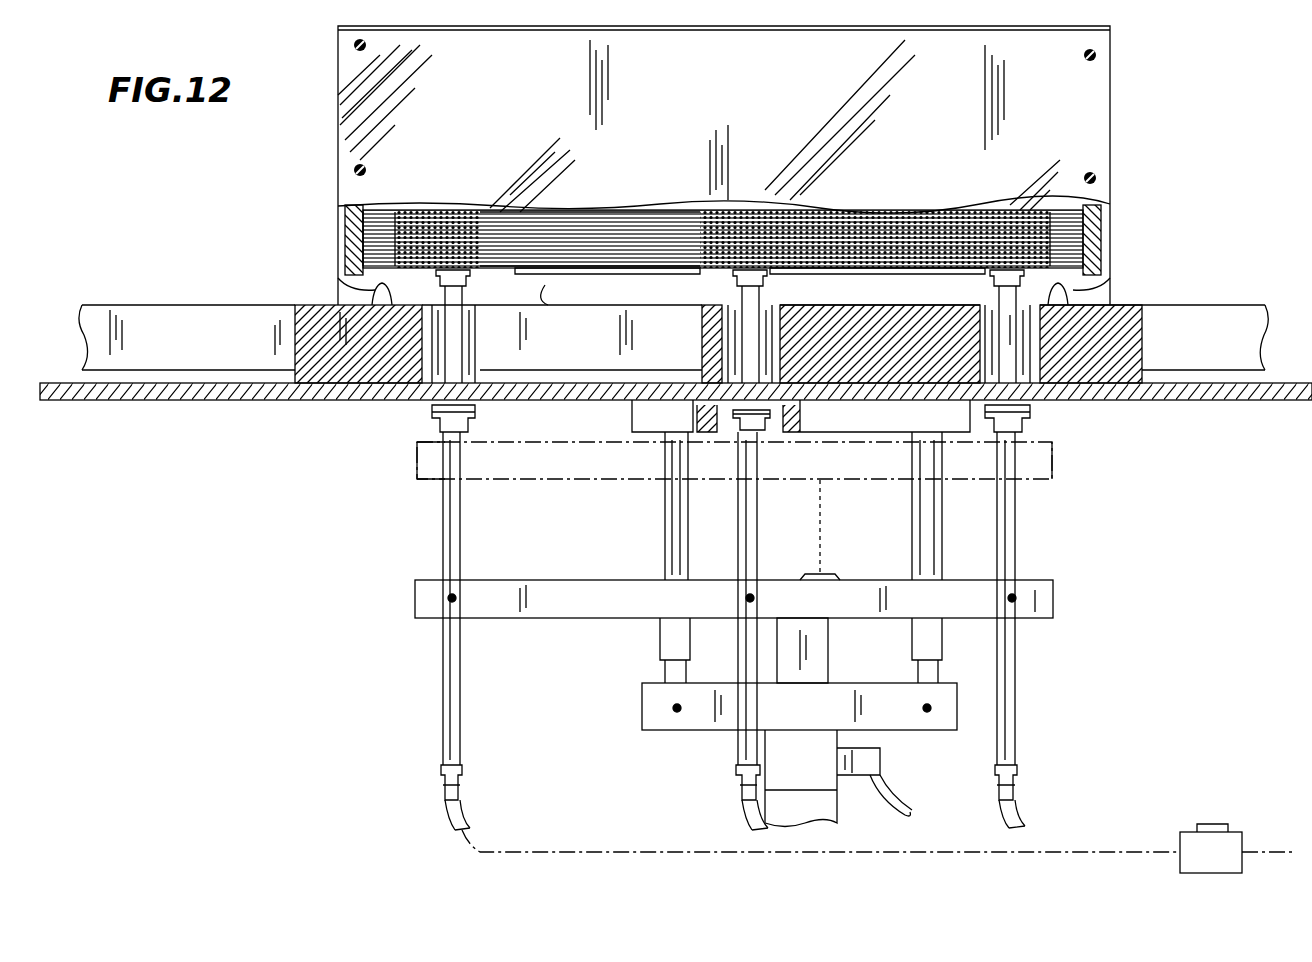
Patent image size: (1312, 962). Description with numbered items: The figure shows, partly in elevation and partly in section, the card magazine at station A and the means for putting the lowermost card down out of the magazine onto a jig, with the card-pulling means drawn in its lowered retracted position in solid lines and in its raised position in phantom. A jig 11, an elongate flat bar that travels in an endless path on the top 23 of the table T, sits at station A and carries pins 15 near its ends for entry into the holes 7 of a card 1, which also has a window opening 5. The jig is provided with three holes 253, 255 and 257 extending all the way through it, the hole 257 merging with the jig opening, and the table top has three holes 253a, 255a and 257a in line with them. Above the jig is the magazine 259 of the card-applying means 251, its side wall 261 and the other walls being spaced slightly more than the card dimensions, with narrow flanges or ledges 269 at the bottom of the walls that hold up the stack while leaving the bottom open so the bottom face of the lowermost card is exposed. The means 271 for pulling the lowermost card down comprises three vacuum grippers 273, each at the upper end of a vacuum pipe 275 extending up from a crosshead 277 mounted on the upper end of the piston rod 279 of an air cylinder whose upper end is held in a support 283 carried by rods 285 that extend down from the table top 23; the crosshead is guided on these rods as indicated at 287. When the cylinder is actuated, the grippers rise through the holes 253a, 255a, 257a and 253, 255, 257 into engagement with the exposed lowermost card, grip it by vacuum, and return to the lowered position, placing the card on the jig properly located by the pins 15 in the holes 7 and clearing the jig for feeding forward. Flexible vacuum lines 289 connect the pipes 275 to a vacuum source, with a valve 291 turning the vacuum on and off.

The card 1 is at (880, 225).
The window opening 5 is at (580, 225).
The holes 7 is at (383, 225).
The jig 11 is at (120, 305).
The pins 15 is at (372, 300).
The table top 23 is at (40, 405).
The card-applying means 251 is at (328, 150).
The hole 253 is at (992, 310).
The hole 253a is at (1040, 405).
The hole 255 is at (735, 310).
The hole 255a is at (795, 412).
The hole 257 is at (440, 305).
The hole 257a is at (478, 402).
The magazine 259 is at (330, 76).
The side wall 261 is at (745, 86).
The flanges or ledges 269 is at (368, 290).
The card pulling means 271 is at (435, 514).
The vacuum grippers 273 is at (425, 418).
The vacuum pipe 275 is at (442, 650).
The crosshead 277 is at (1055, 598).
The piston rod 279 is at (812, 578).
The support 283 is at (642, 700).
The rods 285 is at (665, 510).
The crosshead guide 287 is at (660, 634).
The flexible vacuum lines 289 is at (445, 805).
The valve 291 is at (1228, 864).
The station A is at (730, 24).
The table T is at (42, 368).